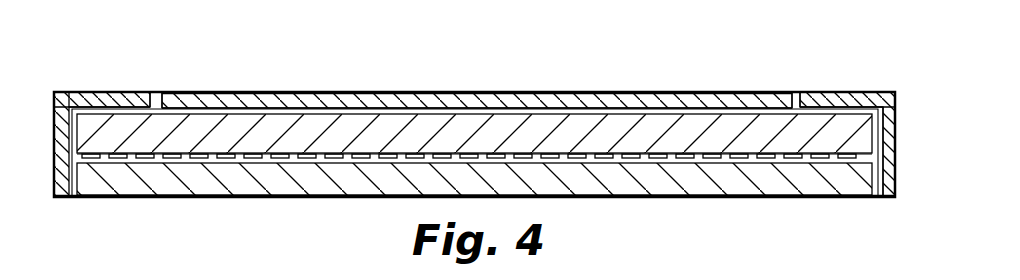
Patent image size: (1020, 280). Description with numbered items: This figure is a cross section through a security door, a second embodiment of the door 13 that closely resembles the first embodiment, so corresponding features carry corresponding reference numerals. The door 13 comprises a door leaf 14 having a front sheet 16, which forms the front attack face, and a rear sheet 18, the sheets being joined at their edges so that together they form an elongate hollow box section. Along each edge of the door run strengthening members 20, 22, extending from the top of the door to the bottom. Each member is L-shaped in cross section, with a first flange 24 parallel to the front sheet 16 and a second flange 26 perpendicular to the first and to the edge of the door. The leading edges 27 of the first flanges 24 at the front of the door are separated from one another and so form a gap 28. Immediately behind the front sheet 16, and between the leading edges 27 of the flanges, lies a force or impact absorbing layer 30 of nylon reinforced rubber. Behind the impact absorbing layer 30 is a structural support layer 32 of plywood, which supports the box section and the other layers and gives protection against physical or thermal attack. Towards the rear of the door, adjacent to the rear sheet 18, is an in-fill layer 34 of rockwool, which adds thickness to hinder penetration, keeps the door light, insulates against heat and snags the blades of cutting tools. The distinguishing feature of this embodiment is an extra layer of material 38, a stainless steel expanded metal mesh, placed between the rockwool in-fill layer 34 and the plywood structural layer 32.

The door 13 is at (473, 83).
The door leaf 14 is at (340, 93).
The front sheet 16 is at (430, 92).
The rear sheet 18 is at (130, 198).
The strengthening member 20 is at (56, 91).
The strengthening member 22 is at (893, 92).
The first flange 24 is at (91, 91).
The second flange 26 is at (897, 173).
The leading edge 27 is at (156, 93).
The gap 28 is at (210, 93).
The force or impact absorbing layer 30 is at (276, 100).
The structural support layer 32 is at (245, 128).
The in-fill layer 34 is at (306, 183).
The extra layer of material 38 is at (357, 155).